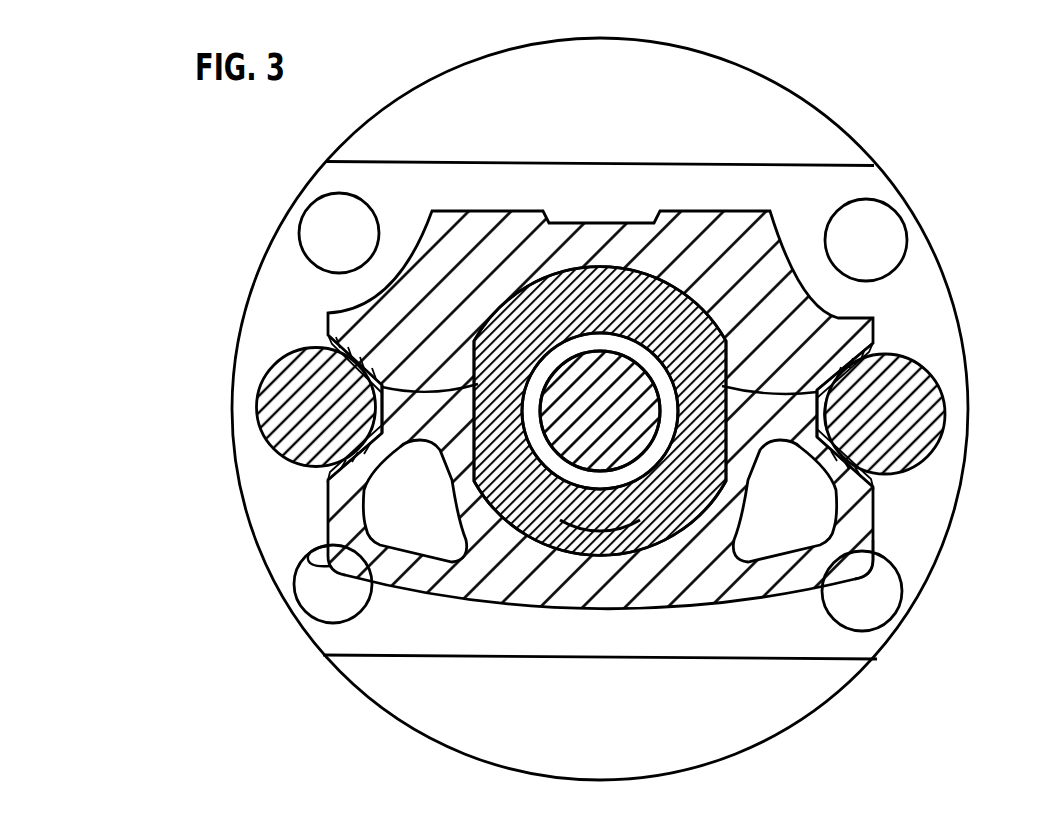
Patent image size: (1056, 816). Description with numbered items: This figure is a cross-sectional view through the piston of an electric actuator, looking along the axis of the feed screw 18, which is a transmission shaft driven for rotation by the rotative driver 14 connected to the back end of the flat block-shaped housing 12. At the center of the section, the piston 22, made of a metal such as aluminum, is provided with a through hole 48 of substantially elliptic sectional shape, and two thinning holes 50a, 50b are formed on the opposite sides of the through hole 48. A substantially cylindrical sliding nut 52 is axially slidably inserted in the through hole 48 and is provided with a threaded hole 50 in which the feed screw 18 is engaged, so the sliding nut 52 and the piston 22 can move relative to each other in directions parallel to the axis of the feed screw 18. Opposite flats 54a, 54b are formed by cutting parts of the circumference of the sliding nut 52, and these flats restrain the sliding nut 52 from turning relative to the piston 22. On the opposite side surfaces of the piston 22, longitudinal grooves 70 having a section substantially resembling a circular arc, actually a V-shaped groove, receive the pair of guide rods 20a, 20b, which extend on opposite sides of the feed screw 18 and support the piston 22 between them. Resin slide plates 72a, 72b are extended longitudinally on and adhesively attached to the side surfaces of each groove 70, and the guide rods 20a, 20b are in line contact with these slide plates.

The rotative driver 14 is at (816, 112).
The housing 12 is at (850, 185).
The piston 22 is at (834, 320).
The sliding nut 52 is at (590, 300).
The threaded hole 50 is at (538, 370).
The through hole 48 is at (624, 548).
The feed screw 18 is at (583, 455).
The guide rod 20a is at (292, 424).
The guide rod 20b is at (917, 427).
The flat 54a is at (332, 466).
The flat 54b is at (826, 394).
The slide plate 72a is at (345, 350).
The slide plate 72b is at (328, 480).
The longitudinal groove 70 is at (372, 388).
The thinning hole 50a is at (322, 552).
The thinning hole 50b is at (878, 562).